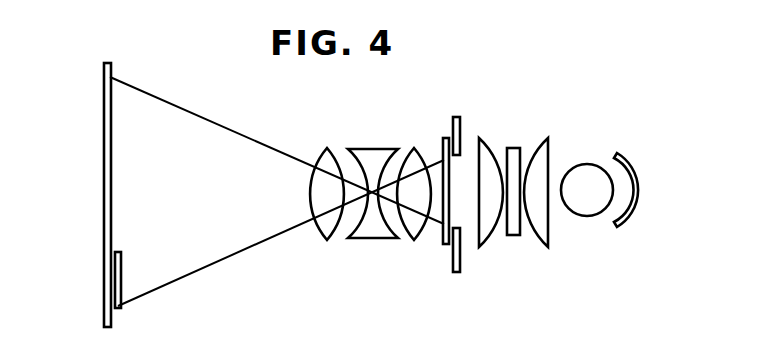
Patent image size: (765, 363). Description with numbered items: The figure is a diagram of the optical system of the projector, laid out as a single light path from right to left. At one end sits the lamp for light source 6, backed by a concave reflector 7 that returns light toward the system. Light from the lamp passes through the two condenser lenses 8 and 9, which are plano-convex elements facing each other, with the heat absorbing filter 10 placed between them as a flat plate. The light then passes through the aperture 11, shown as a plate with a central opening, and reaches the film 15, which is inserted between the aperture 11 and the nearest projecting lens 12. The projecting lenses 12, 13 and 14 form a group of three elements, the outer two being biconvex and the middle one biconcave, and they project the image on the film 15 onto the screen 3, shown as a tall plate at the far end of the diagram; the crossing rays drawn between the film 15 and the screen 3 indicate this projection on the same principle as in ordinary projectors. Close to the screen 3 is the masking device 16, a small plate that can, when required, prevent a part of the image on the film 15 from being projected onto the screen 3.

The screen 3 is at (104, 145).
The masking device 16 is at (121, 296).
The projecting lens 14 is at (318, 151).
The projecting lens 13 is at (370, 238).
The projecting lens 12 is at (416, 151).
The film 15 is at (445, 246).
The aperture 11 is at (460, 120).
The condenser lens 9 is at (493, 241).
The heat absorbing filter 10 is at (513, 235).
The condenser lens 8 is at (548, 218).
The lamp for light source 6 is at (585, 164).
The reflector 7 is at (641, 186).